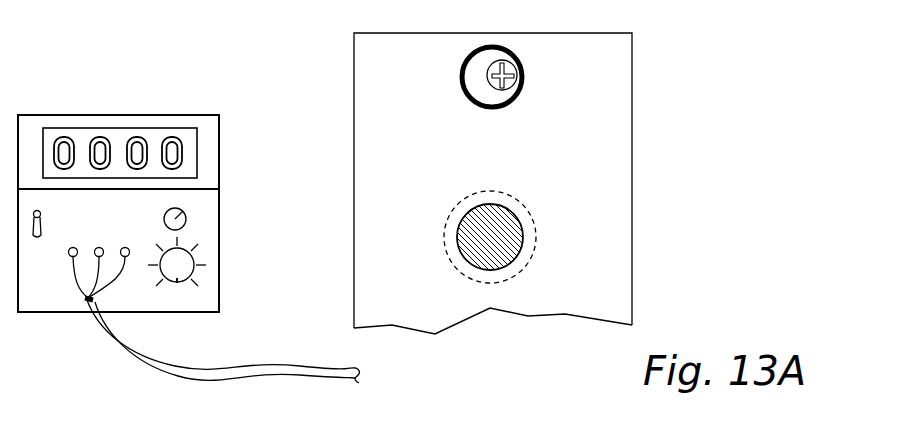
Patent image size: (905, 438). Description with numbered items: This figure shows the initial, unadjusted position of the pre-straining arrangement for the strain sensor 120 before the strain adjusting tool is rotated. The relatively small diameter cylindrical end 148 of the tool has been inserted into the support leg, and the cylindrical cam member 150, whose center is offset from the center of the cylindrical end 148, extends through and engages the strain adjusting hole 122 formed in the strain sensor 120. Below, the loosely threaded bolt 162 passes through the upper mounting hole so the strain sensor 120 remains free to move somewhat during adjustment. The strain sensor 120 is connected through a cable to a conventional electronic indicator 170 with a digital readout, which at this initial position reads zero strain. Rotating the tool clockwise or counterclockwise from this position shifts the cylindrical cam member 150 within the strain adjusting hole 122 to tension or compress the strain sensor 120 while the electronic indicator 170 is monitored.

The electronic indicator 170 is at (60, 332).
The strain sensor 120 is at (680, 138).
The cylindrical cam member 150 is at (466, 75).
The strain adjusting hole 122 is at (472, 103).
The cylindrical end 148 is at (515, 80).
The bolt 162 is at (470, 277).